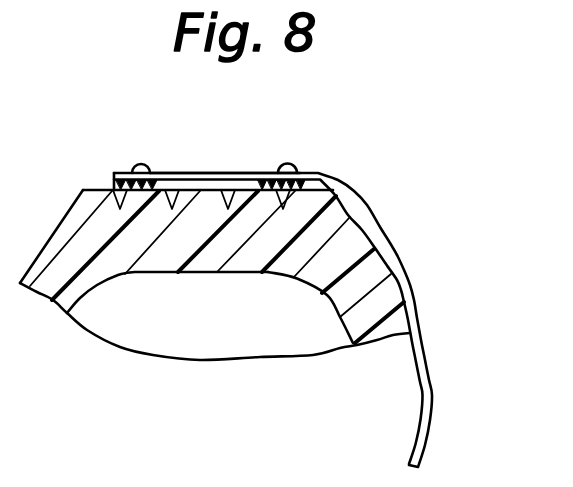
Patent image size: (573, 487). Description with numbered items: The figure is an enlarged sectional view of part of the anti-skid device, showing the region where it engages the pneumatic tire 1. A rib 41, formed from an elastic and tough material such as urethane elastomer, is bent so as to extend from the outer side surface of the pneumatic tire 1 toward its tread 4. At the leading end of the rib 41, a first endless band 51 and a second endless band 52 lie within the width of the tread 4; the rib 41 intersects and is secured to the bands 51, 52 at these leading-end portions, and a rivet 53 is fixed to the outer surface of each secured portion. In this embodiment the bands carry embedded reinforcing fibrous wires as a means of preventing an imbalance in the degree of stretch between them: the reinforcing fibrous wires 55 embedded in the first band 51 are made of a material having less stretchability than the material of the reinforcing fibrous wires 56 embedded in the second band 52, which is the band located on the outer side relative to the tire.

The pneumatic tire 1 is at (383, 301).
The tread 4 is at (247, 174).
The rib 41 is at (431, 381).
The first endless band 51 is at (114, 189).
The second endless band 52 is at (318, 176).
The rivet 53 is at (141, 164).
The reinforcing fibrous wires 55 is at (153, 191).
The reinforcing fibrous wires 56 is at (278, 191).